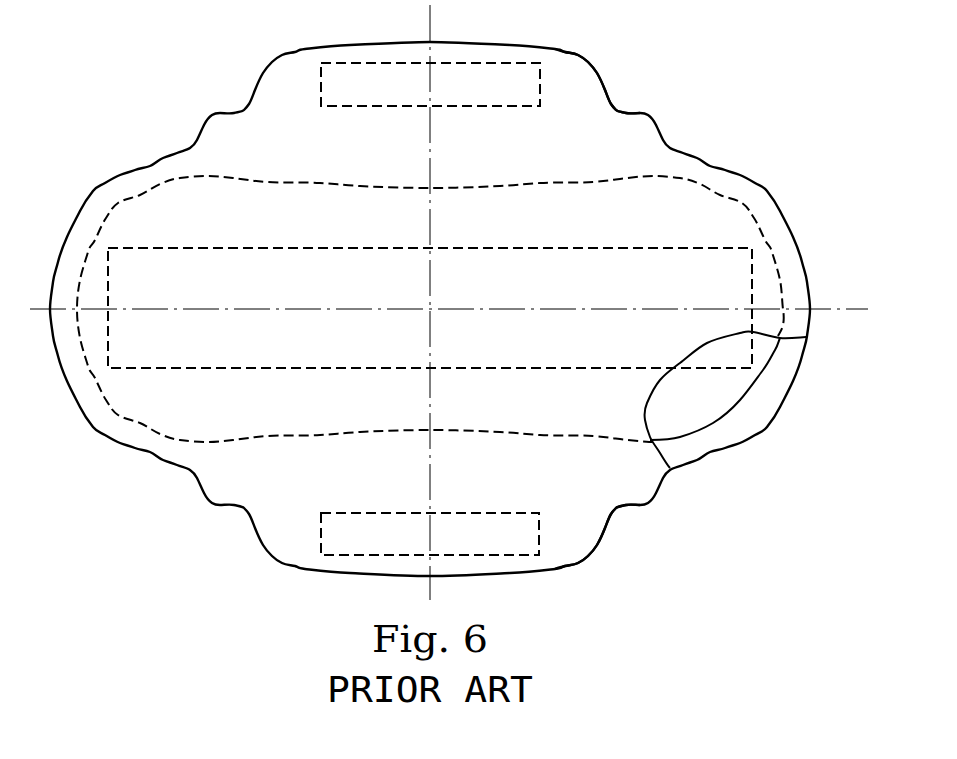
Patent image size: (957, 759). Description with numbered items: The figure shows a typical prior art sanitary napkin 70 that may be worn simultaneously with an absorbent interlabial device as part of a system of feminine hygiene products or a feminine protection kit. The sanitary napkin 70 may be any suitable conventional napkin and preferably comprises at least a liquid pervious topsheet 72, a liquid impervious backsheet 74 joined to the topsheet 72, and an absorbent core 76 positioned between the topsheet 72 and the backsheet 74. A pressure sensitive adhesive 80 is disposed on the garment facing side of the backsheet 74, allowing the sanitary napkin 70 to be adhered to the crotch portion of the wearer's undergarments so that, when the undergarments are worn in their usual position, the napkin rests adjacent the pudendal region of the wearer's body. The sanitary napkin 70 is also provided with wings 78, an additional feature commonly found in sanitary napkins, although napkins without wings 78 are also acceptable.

The sanitary napkin 70 is at (446, 289).
The liquid pervious topsheet 72 is at (620, 460).
The liquid impervious backsheet 74 is at (782, 375).
The absorbent core 76 is at (707, 420).
The wings 78 is at (583, 80).
The pressure sensitive adhesive 80 is at (527, 63).